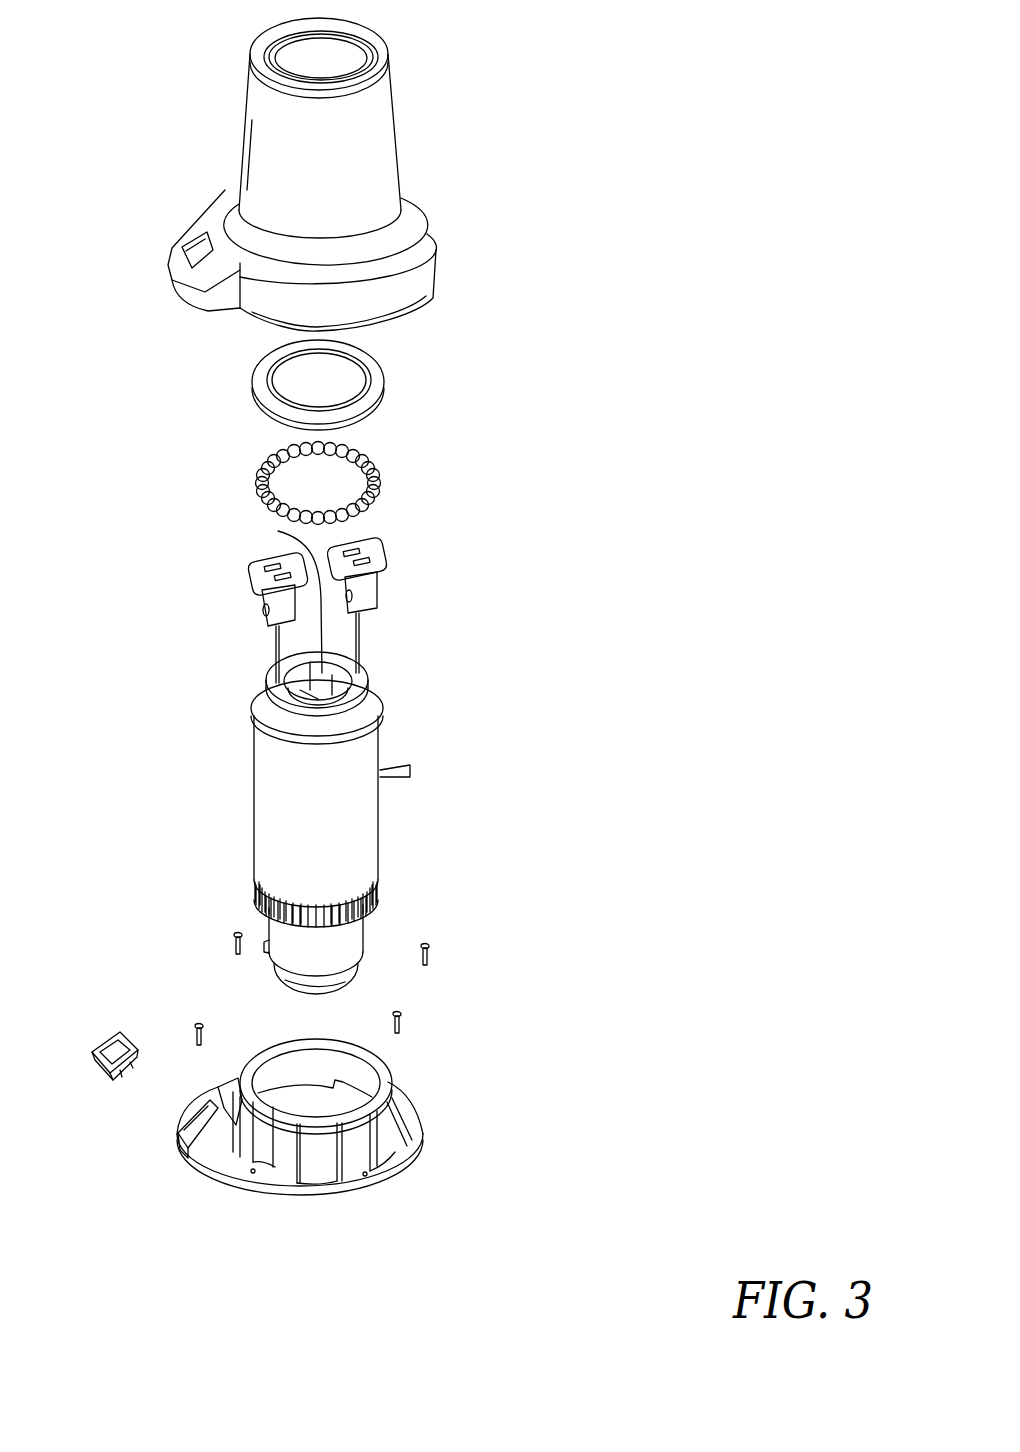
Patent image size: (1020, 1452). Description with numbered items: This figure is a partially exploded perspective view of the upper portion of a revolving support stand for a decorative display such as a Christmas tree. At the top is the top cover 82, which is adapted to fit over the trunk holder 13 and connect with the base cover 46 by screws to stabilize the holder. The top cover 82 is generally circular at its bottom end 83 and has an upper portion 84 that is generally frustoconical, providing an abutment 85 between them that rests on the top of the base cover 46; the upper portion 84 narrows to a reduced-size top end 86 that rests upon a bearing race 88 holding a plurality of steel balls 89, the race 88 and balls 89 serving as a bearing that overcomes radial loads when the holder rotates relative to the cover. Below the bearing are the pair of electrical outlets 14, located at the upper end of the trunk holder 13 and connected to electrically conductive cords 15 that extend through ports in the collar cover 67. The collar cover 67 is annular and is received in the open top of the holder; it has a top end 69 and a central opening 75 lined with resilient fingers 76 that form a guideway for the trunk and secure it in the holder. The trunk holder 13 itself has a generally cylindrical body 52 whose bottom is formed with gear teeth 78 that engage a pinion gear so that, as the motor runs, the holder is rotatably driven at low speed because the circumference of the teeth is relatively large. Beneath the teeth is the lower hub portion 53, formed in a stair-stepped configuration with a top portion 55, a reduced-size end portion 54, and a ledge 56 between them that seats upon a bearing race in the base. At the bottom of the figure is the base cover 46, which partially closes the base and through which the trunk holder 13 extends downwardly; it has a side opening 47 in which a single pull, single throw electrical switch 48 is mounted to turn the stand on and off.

The trunk holder 13 is at (413, 767).
The electrical outlets 14 is at (250, 580).
The electrically conductive cords 15 is at (276, 647).
The base cover 46 is at (307, 1117).
The side opening 47 is at (200, 1118).
The electrical switch 48 is at (107, 1038).
The body 52 is at (343, 748).
The lower hub portion 53 is at (283, 935).
The end portion 54 is at (335, 985).
The top portion 55 is at (363, 942).
The ledge 56 is at (350, 970).
The collar cover 67 is at (357, 703).
The top end 69 is at (367, 680).
The central opening 75 is at (307, 693).
The resilient fingers 76 is at (286, 595).
The gear teeth 78 is at (377, 893).
The top cover 82 is at (397, 132).
The bottom end 83 is at (408, 272).
The upper portion 84 is at (357, 157).
The abutment 85 is at (407, 245).
The top end 86 is at (373, 73).
The bearing race 88 is at (384, 397).
The steel balls 89 is at (380, 488).